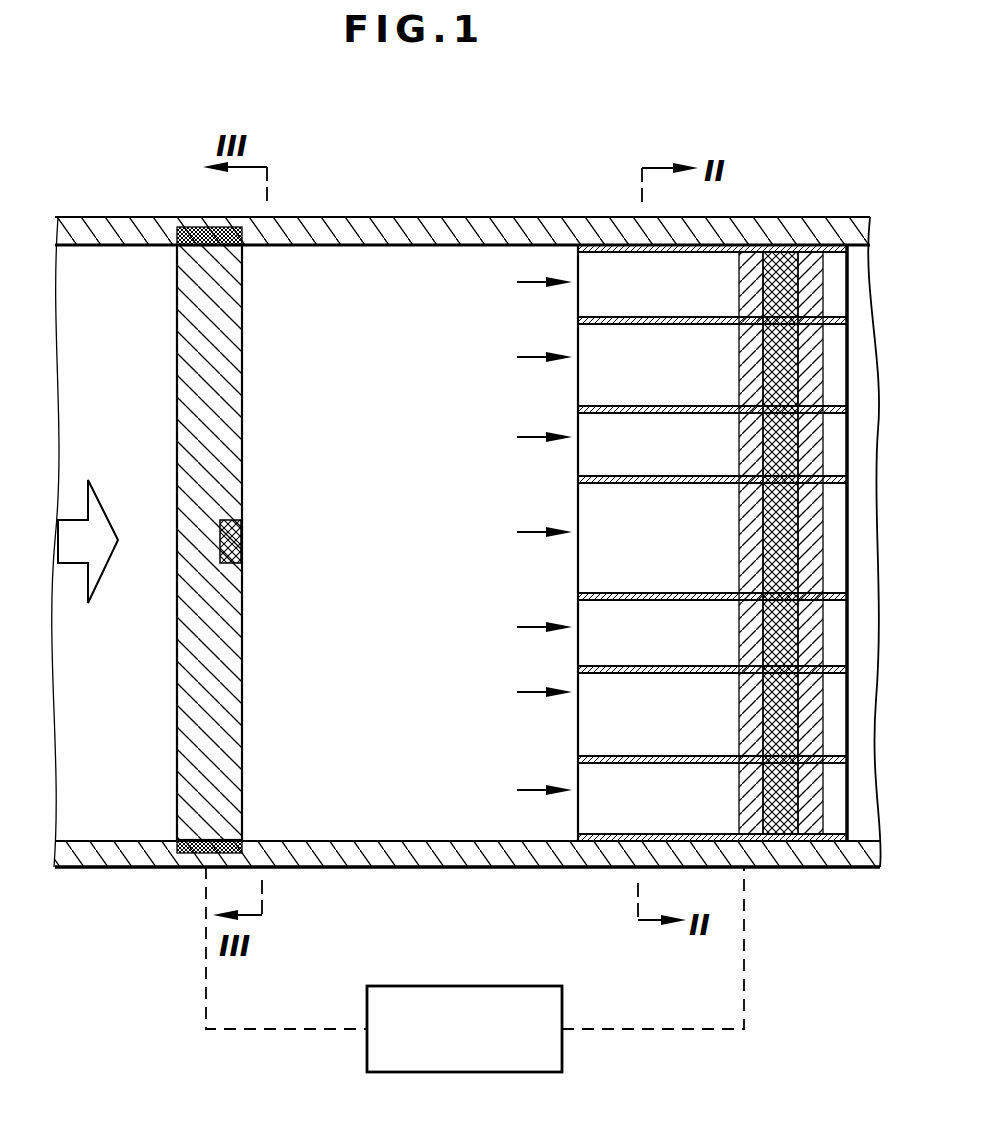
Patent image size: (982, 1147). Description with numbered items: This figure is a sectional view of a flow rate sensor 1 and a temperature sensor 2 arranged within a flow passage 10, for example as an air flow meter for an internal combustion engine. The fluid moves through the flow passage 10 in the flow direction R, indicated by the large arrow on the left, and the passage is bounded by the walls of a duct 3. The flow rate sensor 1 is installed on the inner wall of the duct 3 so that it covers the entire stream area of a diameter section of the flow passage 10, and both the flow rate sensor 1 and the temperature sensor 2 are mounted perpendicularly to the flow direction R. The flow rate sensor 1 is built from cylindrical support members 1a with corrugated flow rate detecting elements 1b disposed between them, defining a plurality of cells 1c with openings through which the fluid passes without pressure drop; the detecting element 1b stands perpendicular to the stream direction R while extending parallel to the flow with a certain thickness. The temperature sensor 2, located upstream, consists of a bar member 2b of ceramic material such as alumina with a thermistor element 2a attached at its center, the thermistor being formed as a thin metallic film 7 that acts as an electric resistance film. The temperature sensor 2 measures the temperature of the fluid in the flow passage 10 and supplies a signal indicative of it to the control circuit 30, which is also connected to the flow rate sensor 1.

The flow rate sensor 1 is at (728, 579).
The cylindrical support member 1a is at (584, 868).
The corrugated flow rate detecting element 1b is at (790, 845).
The cell 1c is at (636, 376).
The temperature sensor 2 is at (251, 540).
The thermistor element 2a is at (243, 544).
The bar member 2b is at (225, 318).
The duct 3 is at (108, 233).
The thin metallic film 7 is at (752, 842).
The flow passage 10 is at (107, 565).
The flow direction R is at (78, 556).
The control circuit 30 is at (562, 1060).